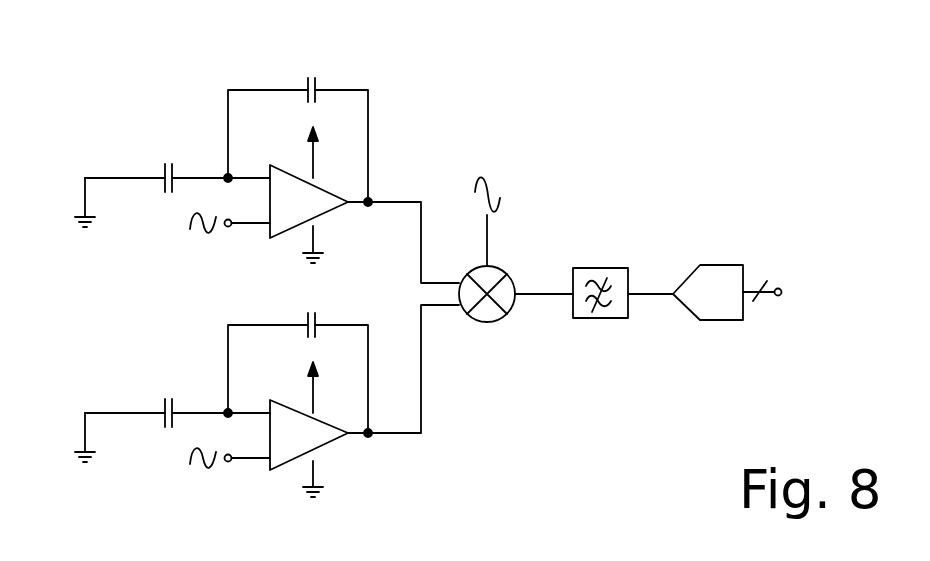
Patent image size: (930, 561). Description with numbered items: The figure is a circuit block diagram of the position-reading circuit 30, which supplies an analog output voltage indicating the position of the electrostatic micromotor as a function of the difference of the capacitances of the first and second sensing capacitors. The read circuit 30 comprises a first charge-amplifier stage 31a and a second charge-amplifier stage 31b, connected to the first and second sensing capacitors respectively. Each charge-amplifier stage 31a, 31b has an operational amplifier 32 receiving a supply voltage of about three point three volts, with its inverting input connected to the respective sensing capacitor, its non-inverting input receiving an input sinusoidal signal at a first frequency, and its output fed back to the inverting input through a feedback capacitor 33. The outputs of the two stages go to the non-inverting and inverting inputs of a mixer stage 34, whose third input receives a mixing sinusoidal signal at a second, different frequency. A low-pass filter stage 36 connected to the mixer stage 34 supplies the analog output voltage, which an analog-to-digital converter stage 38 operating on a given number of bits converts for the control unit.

The position-reading circuit 30 is at (648, 160).
The first charge-amplifier stage 31a is at (390, 144).
The second charge-amplifier stage 31b is at (353, 458).
The operational amplifier 32 is at (327, 202).
The feedback capacitor 33 is at (320, 83).
The mixer stage 34 is at (488, 313).
The low-pass filter stage 36 is at (610, 311).
The analog-to-digital converter stage 38 is at (720, 320).